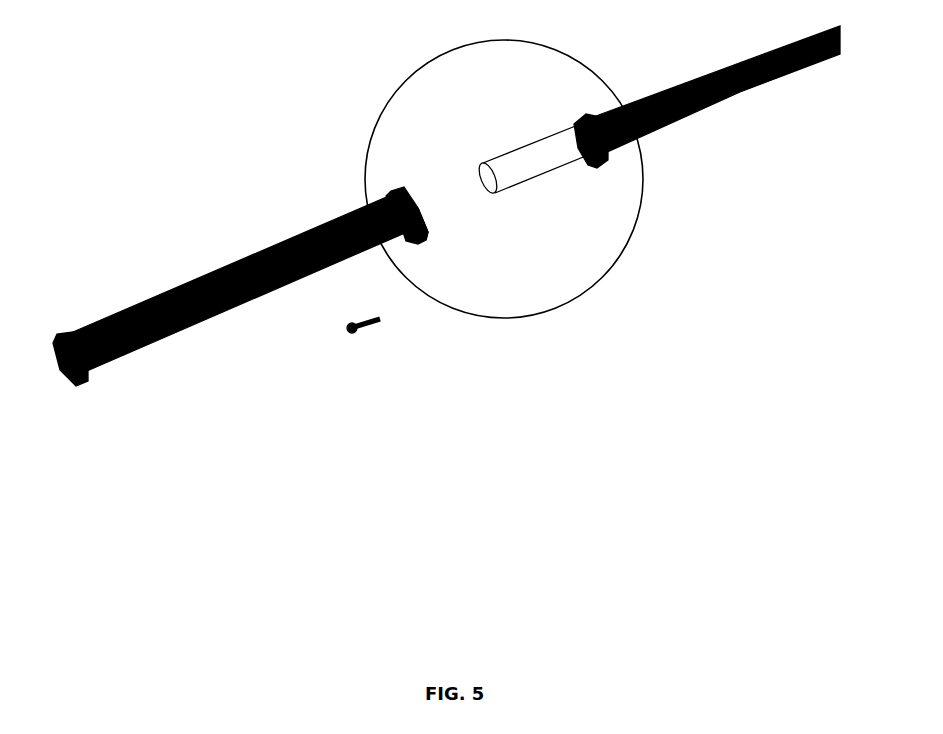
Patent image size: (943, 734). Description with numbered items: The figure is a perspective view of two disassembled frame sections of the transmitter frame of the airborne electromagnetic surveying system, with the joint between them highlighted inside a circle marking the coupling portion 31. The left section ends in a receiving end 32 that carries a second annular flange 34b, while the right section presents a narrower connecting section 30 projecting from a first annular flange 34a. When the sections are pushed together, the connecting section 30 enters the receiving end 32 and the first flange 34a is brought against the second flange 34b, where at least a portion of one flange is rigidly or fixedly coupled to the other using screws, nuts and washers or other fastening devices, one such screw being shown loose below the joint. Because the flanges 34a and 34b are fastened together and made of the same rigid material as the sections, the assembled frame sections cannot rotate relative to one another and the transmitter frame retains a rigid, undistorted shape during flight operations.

The connecting section 30 is at (529, 128).
The coupling portion 31 is at (396, 72).
The receiving end 32 is at (376, 190).
The first annular flange 34a is at (598, 178).
The second annular flange 34b is at (436, 244).